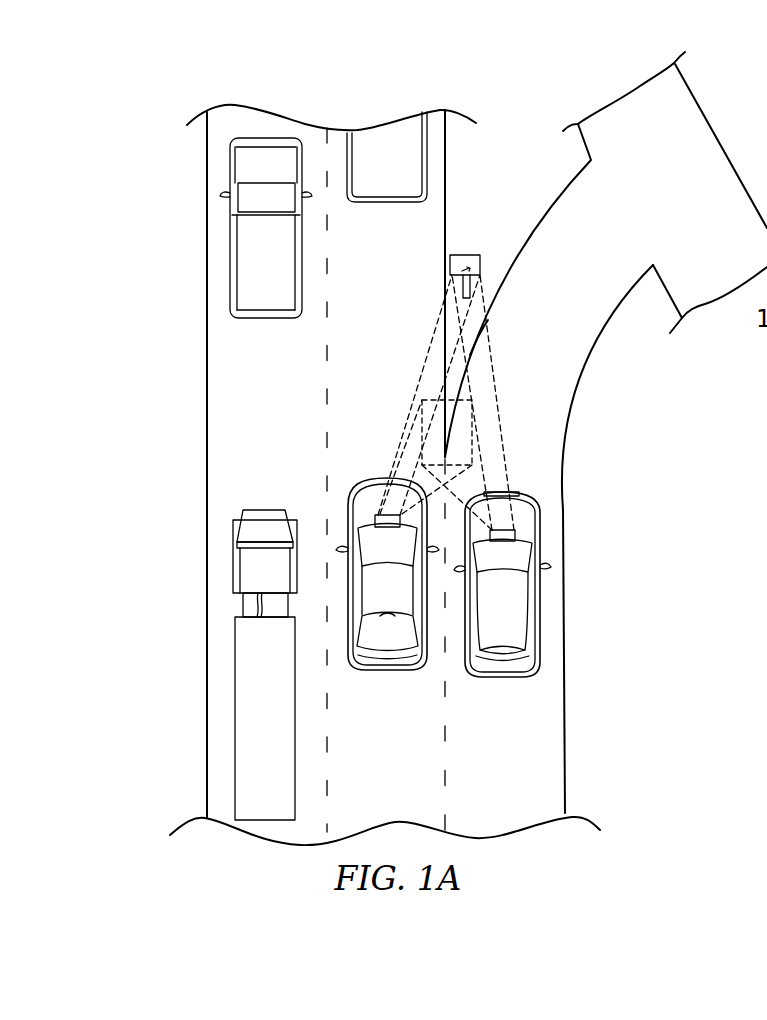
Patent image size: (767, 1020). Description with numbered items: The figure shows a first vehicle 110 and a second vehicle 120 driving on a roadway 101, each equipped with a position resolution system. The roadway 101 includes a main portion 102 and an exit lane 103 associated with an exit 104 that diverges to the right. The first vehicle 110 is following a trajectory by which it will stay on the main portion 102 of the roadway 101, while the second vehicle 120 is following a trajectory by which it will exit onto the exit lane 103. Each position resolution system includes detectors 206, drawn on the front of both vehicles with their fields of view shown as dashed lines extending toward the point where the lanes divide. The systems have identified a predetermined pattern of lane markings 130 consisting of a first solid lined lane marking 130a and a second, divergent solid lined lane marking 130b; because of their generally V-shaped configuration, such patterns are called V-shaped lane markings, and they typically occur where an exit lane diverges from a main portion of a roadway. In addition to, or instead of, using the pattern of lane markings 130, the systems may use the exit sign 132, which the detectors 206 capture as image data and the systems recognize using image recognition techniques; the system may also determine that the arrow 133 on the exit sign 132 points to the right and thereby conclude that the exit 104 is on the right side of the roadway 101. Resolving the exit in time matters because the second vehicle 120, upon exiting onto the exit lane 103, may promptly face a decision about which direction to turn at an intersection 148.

The roadway 101 is at (483, 830).
The main portion 102 is at (223, 347).
The exit lane 103 is at (587, 321).
The exit 104 is at (478, 162).
The intersection 148 is at (636, 129).
The exit sign 132 is at (483, 260).
The arrow 133 is at (483, 269).
The predetermined pattern of lane markings 130 is at (471, 463).
The first solid lined lane marking 130a is at (445, 350).
The second divergent solid lined lane marking 130b is at (479, 343).
The detector 206 is at (376, 510).
The first vehicle 110 is at (391, 660).
The second vehicle 120 is at (500, 662).